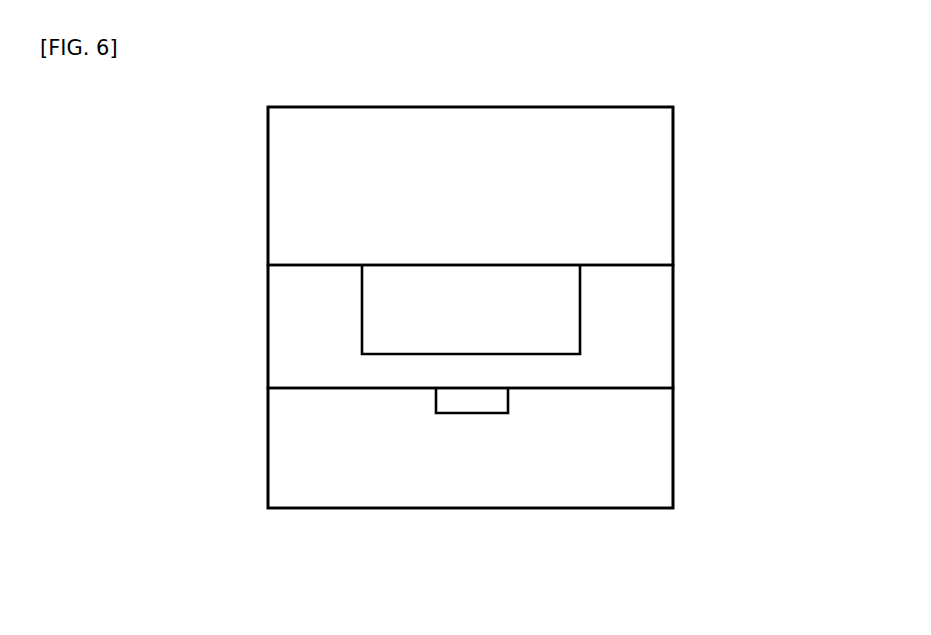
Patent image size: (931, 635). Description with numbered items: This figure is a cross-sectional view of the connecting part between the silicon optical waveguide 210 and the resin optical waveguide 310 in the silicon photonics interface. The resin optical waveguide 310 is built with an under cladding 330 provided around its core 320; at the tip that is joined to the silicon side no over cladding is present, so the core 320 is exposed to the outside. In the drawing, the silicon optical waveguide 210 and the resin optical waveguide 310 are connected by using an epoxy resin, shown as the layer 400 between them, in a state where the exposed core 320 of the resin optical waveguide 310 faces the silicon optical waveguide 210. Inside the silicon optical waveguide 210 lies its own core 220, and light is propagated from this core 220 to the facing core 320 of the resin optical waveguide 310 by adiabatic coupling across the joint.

The resin optical waveguide 310 is at (708, 299).
The under cladding 330 is at (650, 186).
The core 320 is at (558, 313).
The intermediate layer 400 is at (293, 320).
The silicon optical waveguide 210 is at (650, 452).
The core 220 is at (483, 400).